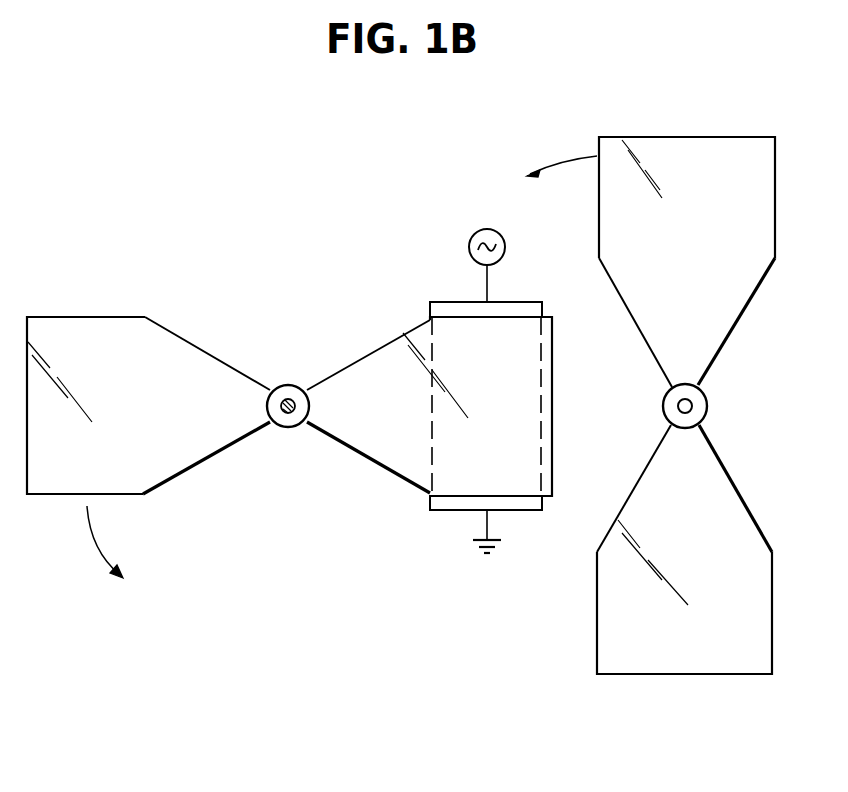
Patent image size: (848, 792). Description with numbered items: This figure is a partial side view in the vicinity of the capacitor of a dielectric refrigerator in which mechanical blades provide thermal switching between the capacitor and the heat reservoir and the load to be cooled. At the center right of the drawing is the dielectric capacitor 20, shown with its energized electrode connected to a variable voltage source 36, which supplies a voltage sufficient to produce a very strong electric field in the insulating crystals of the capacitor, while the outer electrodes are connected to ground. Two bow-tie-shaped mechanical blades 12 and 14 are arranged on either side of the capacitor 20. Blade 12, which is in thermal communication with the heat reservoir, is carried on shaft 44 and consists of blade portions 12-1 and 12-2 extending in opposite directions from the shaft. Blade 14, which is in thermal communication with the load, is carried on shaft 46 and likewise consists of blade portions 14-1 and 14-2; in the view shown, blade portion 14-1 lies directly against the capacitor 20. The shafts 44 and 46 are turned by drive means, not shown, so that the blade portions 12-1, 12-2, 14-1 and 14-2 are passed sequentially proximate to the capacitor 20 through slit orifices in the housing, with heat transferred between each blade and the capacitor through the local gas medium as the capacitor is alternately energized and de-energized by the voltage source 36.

The mechanical blade 12 is at (667, 407).
The blade portion 12-1 is at (687, 160).
The blade portion 12-2 is at (691, 653).
The shaft 44 is at (693, 405).
The mechanical blade 14 is at (315, 388).
The blade portion 14-1 is at (523, 368).
The blade portion 14-2 is at (80, 330).
The shaft 46 is at (289, 399).
The dielectric capacitor 20 is at (447, 300).
The variable voltage source 36 is at (481, 231).